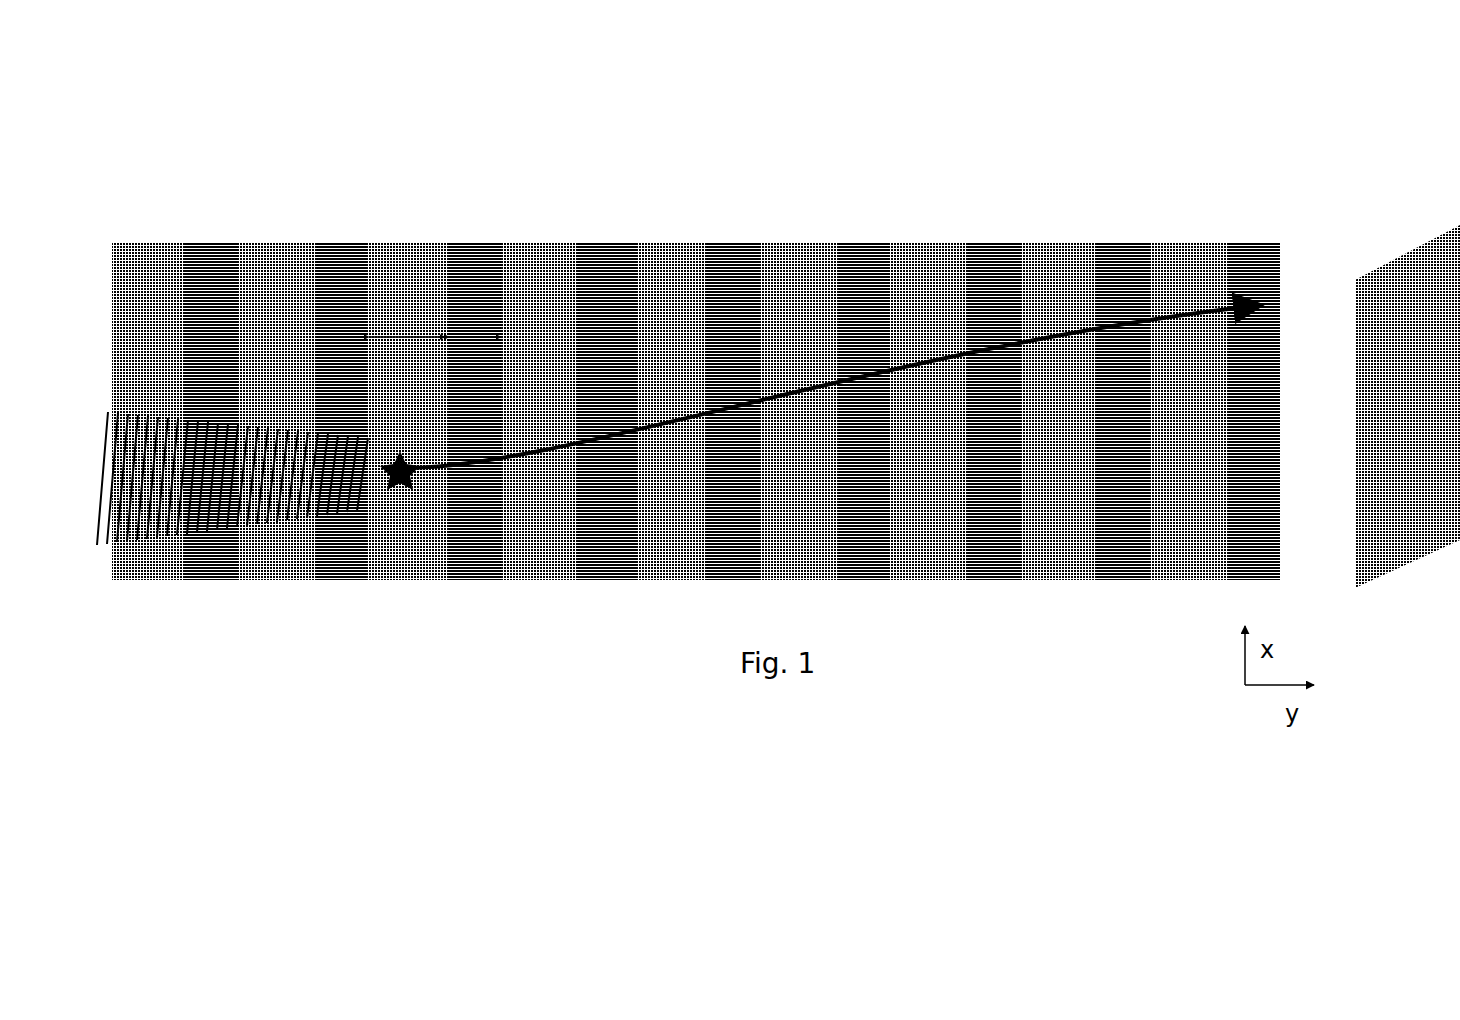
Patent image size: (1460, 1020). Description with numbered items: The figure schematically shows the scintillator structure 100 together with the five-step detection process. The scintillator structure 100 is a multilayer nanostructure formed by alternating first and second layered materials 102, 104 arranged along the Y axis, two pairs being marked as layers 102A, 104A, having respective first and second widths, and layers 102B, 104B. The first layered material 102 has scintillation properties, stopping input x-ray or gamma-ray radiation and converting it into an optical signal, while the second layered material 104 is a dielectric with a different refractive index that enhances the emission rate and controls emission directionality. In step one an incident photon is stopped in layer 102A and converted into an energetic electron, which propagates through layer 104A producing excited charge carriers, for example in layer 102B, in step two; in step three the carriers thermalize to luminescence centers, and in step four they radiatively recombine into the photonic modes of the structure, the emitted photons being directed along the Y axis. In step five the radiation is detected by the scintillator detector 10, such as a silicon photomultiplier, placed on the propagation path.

The scintillator structure 100 is at (272, 72).
The first layered material 102 is at (545, 243).
The second layered material 104 is at (592, 243).
The first layered material of first pair 102A is at (428, 286).
The second layered material of first pair 104A is at (504, 303).
The first layered material of second pair 102B is at (573, 285).
The second layered material of second pair 104B is at (633, 305).
The scintillator detector 10 is at (1405, 252).